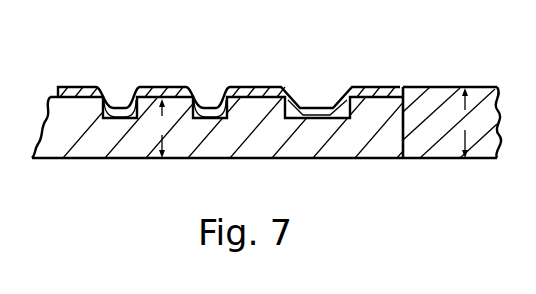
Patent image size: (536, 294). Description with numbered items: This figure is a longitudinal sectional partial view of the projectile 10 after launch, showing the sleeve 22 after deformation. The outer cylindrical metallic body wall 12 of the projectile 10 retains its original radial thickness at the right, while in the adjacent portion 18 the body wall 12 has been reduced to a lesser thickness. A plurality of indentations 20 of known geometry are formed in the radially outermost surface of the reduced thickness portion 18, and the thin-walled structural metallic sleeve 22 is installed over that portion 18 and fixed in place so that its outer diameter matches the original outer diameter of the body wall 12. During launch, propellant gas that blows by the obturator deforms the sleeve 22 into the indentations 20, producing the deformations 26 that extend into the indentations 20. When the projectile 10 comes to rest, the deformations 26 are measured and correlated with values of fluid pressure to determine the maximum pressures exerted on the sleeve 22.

The projectile 10 is at (266, 112).
The body wall 12 is at (452, 86).
The portion 18 is at (240, 157).
The indentations 20 is at (53, 152).
The sleeve 22 is at (86, 94).
The deformations 26 is at (121, 98).